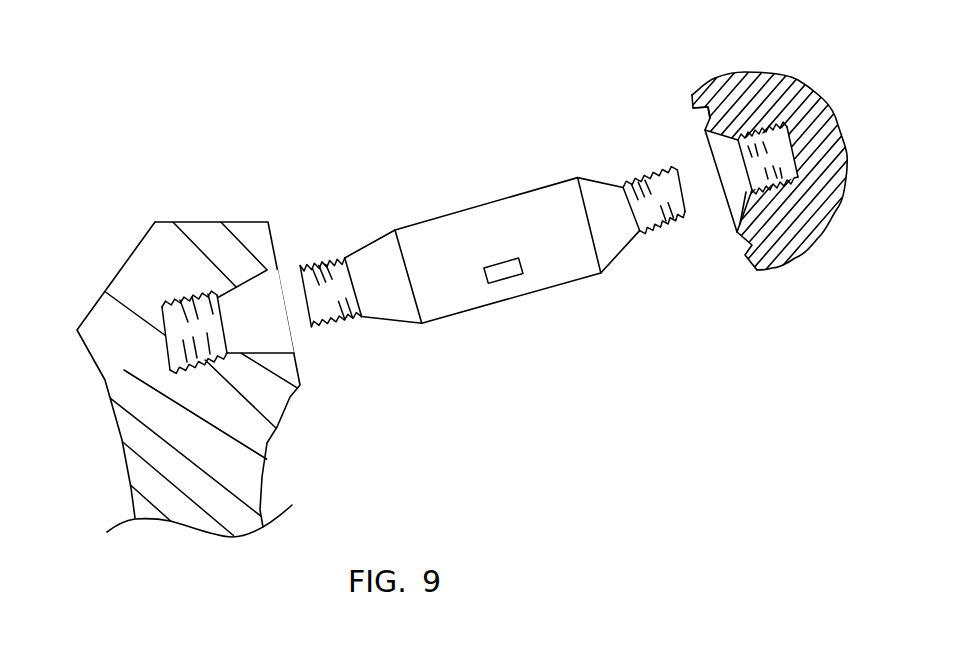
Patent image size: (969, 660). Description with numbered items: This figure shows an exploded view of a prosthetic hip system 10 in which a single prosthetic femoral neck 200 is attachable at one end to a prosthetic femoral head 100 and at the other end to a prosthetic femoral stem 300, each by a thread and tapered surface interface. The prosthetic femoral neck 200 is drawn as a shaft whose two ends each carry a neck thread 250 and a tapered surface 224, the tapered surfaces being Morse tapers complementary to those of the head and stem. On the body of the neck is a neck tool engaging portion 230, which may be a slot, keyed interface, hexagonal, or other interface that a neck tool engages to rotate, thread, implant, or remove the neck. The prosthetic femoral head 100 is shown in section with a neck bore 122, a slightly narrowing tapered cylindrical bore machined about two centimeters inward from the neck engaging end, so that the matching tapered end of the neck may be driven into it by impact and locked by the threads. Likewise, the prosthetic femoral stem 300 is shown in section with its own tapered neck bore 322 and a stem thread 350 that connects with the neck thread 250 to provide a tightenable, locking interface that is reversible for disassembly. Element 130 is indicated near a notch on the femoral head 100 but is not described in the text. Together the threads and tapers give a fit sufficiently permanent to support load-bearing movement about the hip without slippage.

The prosthetic hip system 10 is at (315, 127).
The prosthetic femoral head 100 is at (782, 258).
The neck bore 122 is at (735, 200).
The notch of cap 130 is at (692, 118).
The prosthetic femoral neck 200 is at (500, 212).
The tapered surface 224 is at (374, 240).
The neck tool engaging portion 230 is at (503, 313).
The neck thread 250 is at (342, 325).
The prosthetic femoral stem 300 is at (128, 278).
The neck bore 322 is at (263, 340).
The stem thread 350 is at (180, 335).